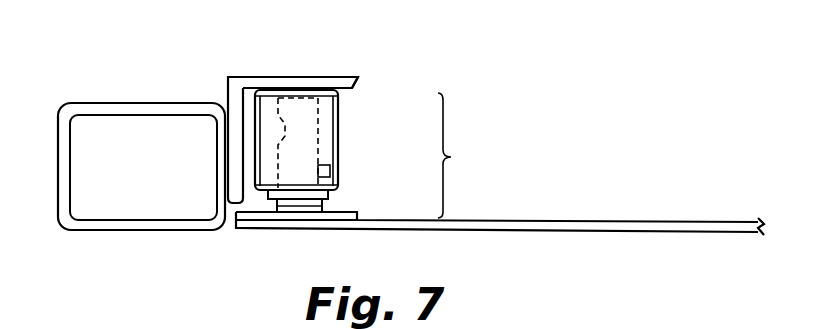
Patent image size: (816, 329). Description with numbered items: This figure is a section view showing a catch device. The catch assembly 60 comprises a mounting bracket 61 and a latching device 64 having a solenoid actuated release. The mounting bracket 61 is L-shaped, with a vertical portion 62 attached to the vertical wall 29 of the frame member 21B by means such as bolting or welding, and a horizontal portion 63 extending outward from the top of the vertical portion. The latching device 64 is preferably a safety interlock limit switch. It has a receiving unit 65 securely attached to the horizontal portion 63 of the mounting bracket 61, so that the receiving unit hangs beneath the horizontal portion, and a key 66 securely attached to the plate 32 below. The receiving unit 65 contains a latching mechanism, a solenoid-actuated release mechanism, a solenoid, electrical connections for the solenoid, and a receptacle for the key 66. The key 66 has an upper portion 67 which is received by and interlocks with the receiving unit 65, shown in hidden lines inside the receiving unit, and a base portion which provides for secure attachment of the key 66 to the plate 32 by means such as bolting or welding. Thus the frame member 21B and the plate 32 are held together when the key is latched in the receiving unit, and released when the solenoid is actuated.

The frame member 21B is at (128, 103).
The vertical wall 29 is at (217, 148).
The vertical portion 62 is at (228, 90).
The horizontal portion 63 is at (312, 77).
The mounting bracket 61 is at (352, 84).
The receiving unit 65 is at (340, 125).
The upper portion 67 is at (331, 166).
The key 66 is at (322, 208).
The plate 32 is at (618, 221).
The latching device 64 is at (453, 157).
The catch assembly 60 is at (573, 106).